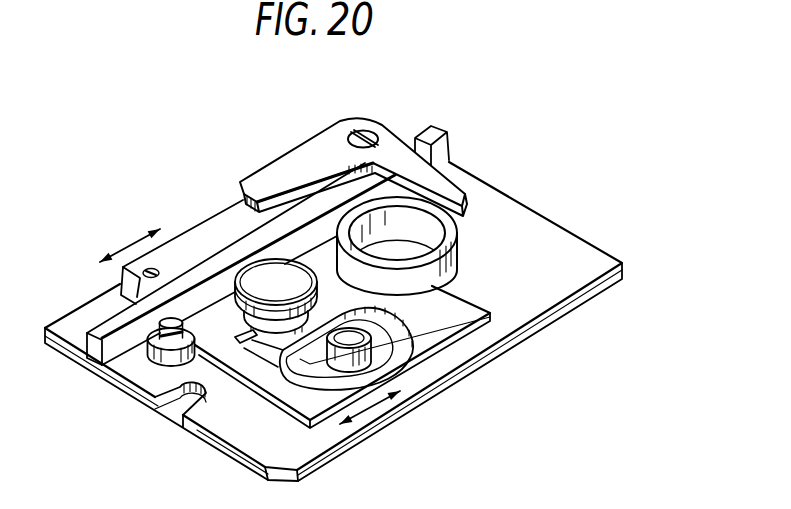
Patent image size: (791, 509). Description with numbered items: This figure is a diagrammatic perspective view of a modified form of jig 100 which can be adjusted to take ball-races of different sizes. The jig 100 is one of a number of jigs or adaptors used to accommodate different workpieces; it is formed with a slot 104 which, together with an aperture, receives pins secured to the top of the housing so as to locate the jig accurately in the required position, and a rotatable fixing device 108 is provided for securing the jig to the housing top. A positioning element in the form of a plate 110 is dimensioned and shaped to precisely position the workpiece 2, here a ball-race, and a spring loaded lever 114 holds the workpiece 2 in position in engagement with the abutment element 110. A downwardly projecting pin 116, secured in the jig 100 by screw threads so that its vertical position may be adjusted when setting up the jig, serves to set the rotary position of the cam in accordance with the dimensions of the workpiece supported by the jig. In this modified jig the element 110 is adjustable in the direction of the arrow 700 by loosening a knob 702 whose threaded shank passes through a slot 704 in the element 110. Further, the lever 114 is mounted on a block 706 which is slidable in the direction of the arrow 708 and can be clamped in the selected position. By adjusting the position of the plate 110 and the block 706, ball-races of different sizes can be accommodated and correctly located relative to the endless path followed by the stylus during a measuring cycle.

The jig 100 is at (528, 190).
The slot 104 is at (197, 418).
The rotatable fixing device 108 is at (353, 339).
The positioning abutment 110 is at (450, 312).
The spring loaded lever 114 is at (303, 158).
The downwardly projecting pin 116 is at (158, 352).
The workpiece 2 is at (455, 243).
The arrow 700 is at (372, 408).
The knob 702 is at (240, 245).
The slot 704 is at (250, 343).
The block 706 is at (252, 262).
The arrow 708 is at (130, 245).